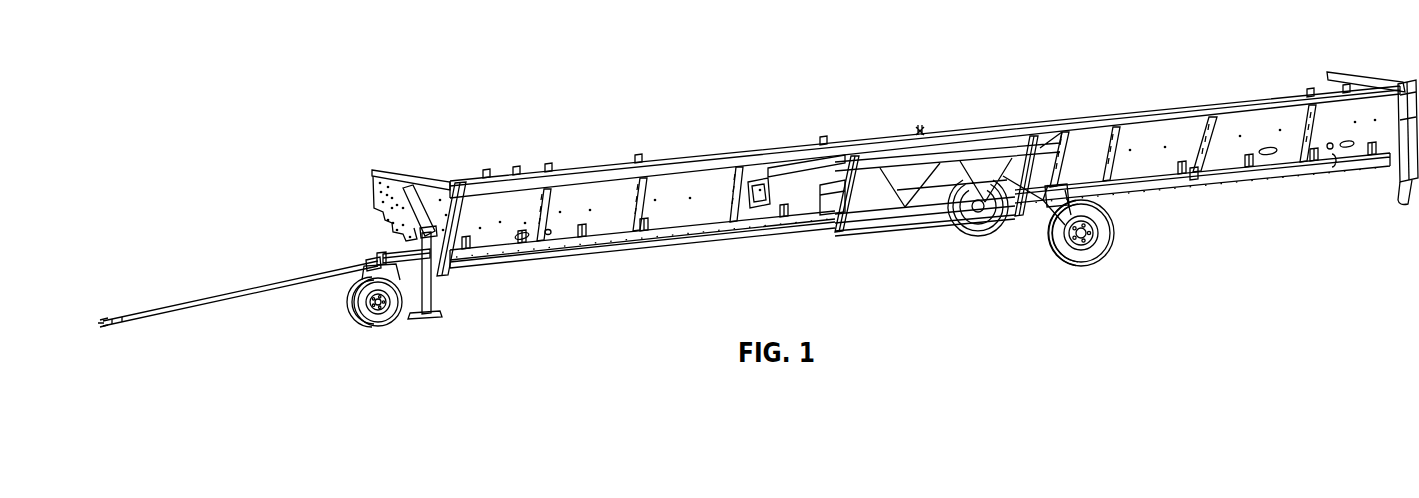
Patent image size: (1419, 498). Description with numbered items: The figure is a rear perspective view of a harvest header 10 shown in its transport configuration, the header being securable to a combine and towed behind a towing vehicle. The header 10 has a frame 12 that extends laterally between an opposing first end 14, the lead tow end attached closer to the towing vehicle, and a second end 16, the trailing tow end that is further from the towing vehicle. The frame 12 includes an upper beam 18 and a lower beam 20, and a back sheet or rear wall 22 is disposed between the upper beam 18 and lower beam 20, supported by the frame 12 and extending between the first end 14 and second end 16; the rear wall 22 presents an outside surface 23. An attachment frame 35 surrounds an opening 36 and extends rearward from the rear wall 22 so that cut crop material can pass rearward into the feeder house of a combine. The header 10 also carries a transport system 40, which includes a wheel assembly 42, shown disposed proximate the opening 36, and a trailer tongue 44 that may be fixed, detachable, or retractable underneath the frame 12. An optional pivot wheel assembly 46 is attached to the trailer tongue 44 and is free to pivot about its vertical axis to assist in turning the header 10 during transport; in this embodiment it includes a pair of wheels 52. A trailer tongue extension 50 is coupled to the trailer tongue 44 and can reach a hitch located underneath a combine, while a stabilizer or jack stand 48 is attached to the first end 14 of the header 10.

The harvest header 10 is at (758, 203).
The frame 12 is at (878, 204).
The first end 14 is at (372, 190).
The second end 16 is at (1410, 188).
The upper beam 18 is at (1235, 105).
The lower beam 20 is at (1217, 190).
The rear wall 22 is at (1262, 138).
The outside surface 23 is at (1177, 135).
The attachment frame 35 is at (1000, 152).
The opening 36 is at (890, 198).
The transport system 40 is at (1003, 262).
The wheel assembly 42 is at (1125, 226).
The trailer tongue 44 is at (392, 254).
The pivot wheel assembly 46 is at (343, 312).
The jack stand 48 is at (435, 285).
The trailer tongue extension 50 is at (180, 303).
The wheels 52 is at (377, 328).